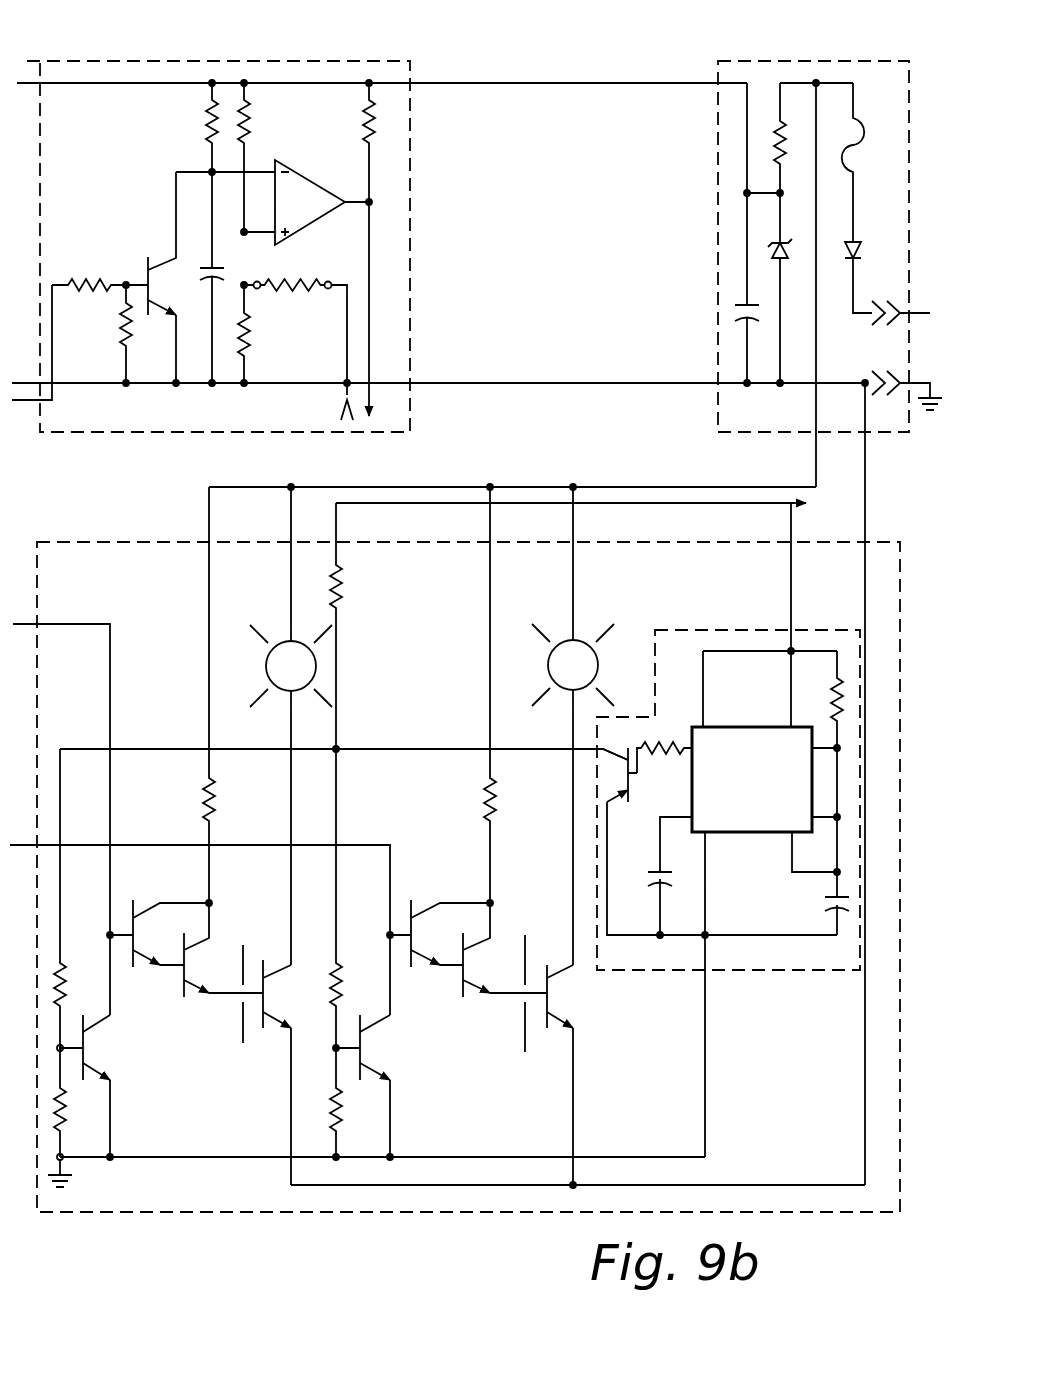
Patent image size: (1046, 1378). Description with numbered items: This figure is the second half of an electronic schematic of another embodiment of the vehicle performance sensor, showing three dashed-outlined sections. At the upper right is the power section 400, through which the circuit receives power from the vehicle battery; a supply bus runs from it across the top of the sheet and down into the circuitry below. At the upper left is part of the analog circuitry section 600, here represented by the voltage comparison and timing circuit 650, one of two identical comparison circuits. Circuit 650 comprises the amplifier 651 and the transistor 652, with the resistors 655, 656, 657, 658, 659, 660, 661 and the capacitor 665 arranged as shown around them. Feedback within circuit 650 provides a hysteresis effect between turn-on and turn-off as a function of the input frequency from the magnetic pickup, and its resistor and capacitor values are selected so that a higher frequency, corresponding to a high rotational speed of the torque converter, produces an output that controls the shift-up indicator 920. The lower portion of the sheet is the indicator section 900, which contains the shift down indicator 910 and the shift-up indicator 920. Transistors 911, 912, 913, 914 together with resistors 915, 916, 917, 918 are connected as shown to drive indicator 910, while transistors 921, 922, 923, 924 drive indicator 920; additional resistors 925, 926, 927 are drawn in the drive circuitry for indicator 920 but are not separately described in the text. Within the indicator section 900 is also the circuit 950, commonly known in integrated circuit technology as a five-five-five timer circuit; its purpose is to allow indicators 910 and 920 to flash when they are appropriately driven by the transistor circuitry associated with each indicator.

The analog circuitry section 600 is at (140, 31).
The voltage comparison and timing circuit 650 is at (182, 61).
The amplifier 651 is at (320, 211).
The transistor 652 is at (157, 291).
The resistor 655 is at (100, 250).
The resistor 656 is at (118, 340).
The resistor 657 is at (206, 118).
The resistor 658 is at (252, 124).
The resistor 659 is at (254, 342).
The resistor 660 is at (288, 298).
The resistor 661 is at (364, 139).
The capacitor 665 is at (227, 267).
The power section 400 is at (792, 61).
The indicator section 900 is at (498, 1270).
The shift down indicator 910 is at (282, 642).
The transistor 911 is at (91, 1038).
The transistor 912 is at (135, 920).
The transistor 913 is at (191, 947).
The transistor 914 is at (267, 983).
The resistor 915 is at (64, 990).
The resistor 916 is at (64, 1104).
The resistor 917 is at (216, 778).
The resistor 918 is at (345, 579).
The shift-up indicator 920 is at (564, 640).
The transistor 921 is at (365, 1038).
The transistor 922 is at (415, 932).
The transistor 923 is at (468, 947).
The transistor 924 is at (553, 984).
The resistor 925 is at (362, 968).
The resistor 926 is at (342, 1106).
The resistor 927 is at (495, 795).
The 555 timer circuit 950 is at (785, 971).